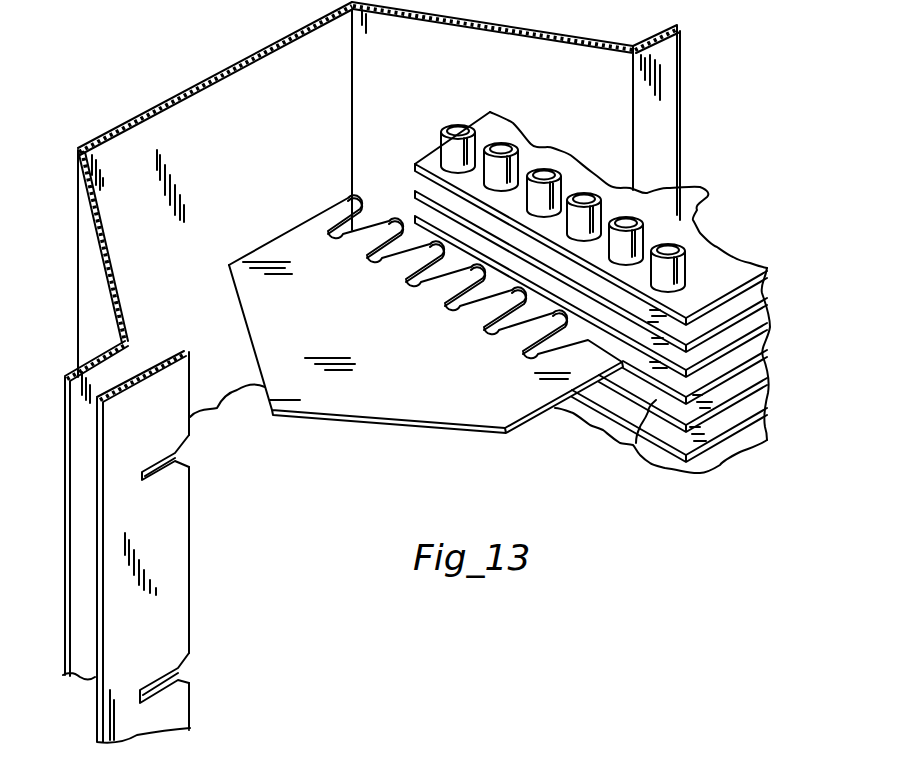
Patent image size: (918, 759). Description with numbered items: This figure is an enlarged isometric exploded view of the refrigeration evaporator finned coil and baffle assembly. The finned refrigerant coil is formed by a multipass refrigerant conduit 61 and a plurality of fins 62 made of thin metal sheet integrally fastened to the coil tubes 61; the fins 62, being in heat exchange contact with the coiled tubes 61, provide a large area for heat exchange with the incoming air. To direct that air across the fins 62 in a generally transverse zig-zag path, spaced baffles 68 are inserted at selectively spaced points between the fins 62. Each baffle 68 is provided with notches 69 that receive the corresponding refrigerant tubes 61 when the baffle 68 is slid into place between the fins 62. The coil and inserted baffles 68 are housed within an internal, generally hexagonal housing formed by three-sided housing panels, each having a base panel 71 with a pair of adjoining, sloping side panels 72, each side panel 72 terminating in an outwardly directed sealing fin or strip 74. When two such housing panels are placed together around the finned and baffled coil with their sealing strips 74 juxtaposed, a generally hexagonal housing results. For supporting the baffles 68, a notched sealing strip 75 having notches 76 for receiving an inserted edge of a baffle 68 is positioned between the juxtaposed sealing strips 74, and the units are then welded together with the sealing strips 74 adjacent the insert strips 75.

The refrigerant conduit 61 is at (683, 252).
The fins 62 is at (768, 224).
The baffles 68 is at (428, 395).
The notches 69 is at (497, 316).
The base panel 71 is at (248, 127).
The side panels 72 is at (430, 82).
The sealing fin or strip 74 is at (673, 98).
The notched sealing strip 75 is at (177, 513).
The notches 76 is at (183, 453).